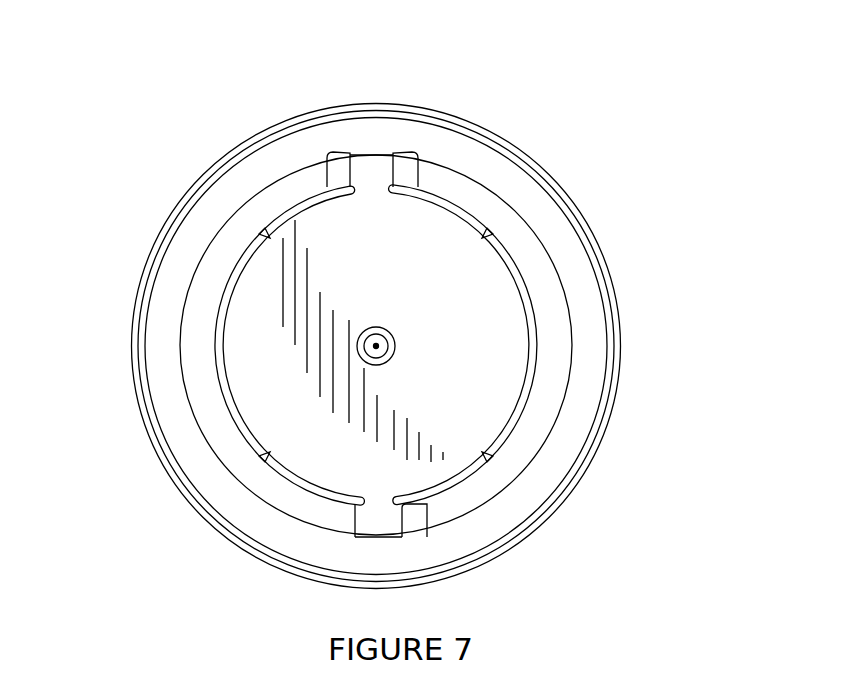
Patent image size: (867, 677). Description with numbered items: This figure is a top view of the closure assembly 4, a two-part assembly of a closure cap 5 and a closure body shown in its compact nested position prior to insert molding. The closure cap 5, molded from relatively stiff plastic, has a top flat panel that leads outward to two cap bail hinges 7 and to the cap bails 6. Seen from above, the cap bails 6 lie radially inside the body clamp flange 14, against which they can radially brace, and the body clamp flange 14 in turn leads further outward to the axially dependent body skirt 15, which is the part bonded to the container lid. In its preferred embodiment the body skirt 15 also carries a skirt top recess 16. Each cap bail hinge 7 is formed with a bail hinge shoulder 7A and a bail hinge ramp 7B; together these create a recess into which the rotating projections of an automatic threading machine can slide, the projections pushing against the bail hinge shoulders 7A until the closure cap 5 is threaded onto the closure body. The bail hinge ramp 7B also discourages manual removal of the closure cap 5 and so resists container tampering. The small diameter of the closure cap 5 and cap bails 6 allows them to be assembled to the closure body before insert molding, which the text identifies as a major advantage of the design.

The closure assembly 4 is at (432, 314).
The closure cap 5 is at (257, 379).
The cap bail 6 is at (198, 302).
The cap bail hinge 7 is at (375, 170).
The bail hinge shoulder 7A is at (338, 172).
The bail hinge ramp 7B is at (405, 170).
The body clamp flange 14 is at (568, 248).
The body skirt 15 is at (617, 280).
The skirt top recess 16 is at (610, 347).